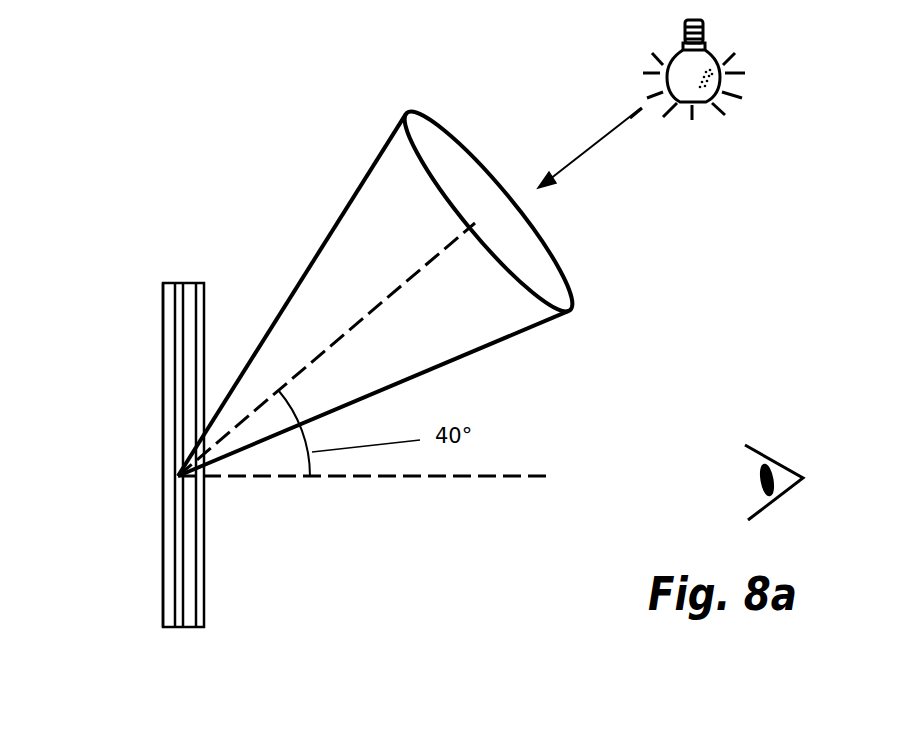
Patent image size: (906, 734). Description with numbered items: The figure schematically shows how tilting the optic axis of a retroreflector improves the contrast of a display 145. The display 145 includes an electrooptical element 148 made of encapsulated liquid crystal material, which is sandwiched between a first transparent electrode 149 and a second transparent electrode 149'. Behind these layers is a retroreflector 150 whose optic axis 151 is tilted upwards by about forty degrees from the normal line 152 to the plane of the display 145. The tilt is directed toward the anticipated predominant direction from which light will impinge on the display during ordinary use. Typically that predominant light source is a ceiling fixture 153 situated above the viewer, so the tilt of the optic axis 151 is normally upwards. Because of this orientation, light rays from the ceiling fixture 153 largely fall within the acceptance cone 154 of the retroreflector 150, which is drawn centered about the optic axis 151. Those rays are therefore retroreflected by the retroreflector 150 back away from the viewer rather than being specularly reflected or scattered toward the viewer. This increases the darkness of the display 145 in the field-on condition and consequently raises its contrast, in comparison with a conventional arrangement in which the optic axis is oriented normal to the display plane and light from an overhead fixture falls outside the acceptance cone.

The display 145 is at (183, 637).
The electrooptical element 148 is at (197, 560).
The first transparent electrode 149 is at (254, 455).
The second transparent electrode 149' is at (120, 455).
The retroreflector 150 is at (163, 523).
The optic axis 151 is at (297, 372).
The normal line 152 is at (407, 480).
The ceiling fixture 153 is at (757, 73).
The acceptance cone 154 is at (390, 135).